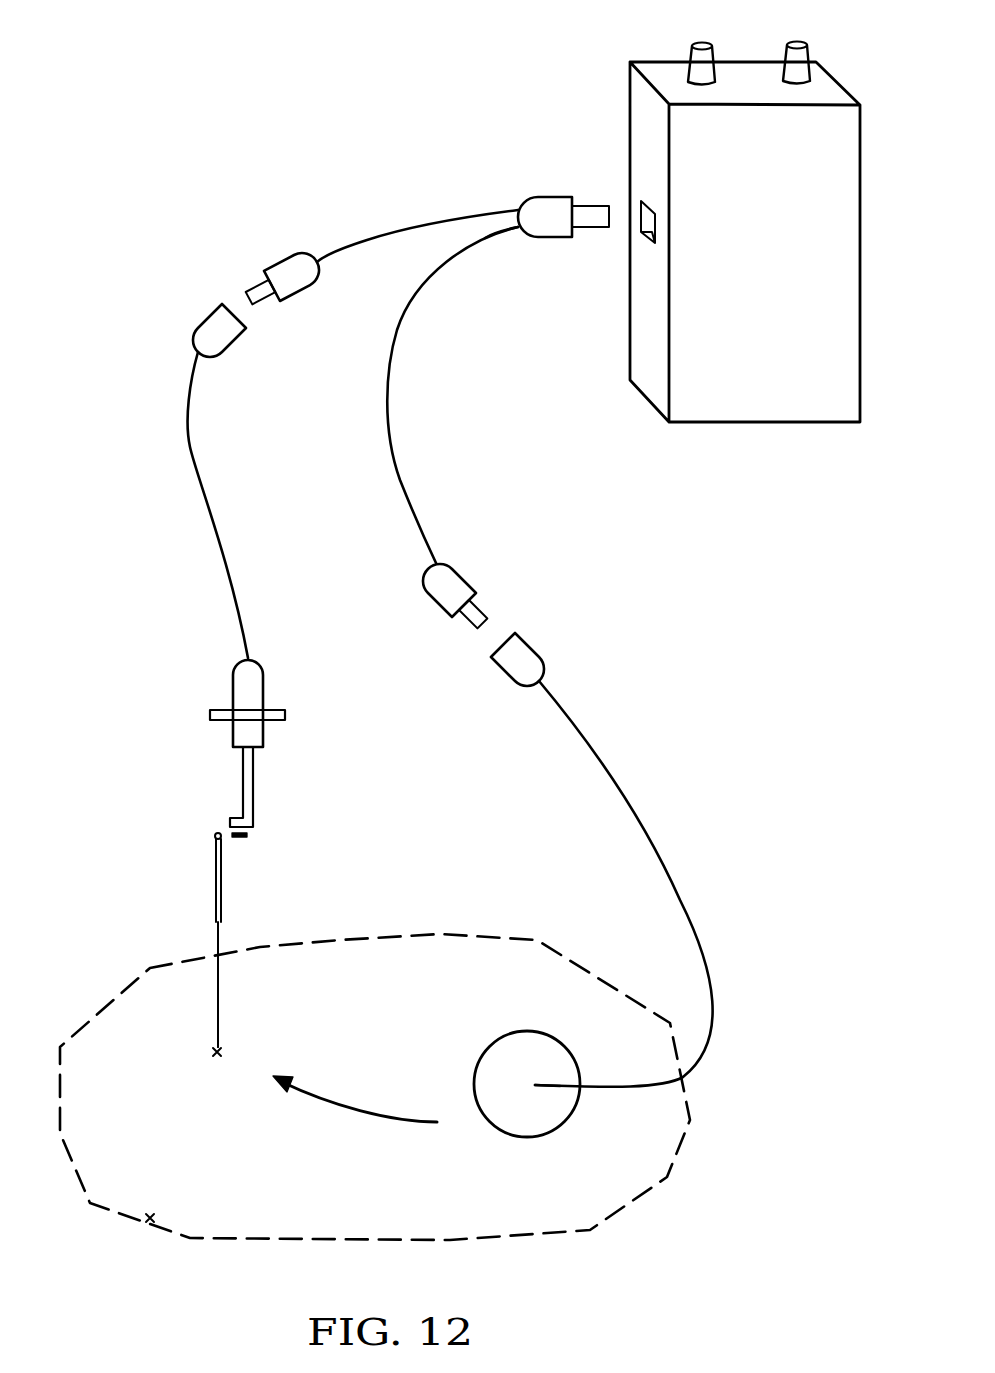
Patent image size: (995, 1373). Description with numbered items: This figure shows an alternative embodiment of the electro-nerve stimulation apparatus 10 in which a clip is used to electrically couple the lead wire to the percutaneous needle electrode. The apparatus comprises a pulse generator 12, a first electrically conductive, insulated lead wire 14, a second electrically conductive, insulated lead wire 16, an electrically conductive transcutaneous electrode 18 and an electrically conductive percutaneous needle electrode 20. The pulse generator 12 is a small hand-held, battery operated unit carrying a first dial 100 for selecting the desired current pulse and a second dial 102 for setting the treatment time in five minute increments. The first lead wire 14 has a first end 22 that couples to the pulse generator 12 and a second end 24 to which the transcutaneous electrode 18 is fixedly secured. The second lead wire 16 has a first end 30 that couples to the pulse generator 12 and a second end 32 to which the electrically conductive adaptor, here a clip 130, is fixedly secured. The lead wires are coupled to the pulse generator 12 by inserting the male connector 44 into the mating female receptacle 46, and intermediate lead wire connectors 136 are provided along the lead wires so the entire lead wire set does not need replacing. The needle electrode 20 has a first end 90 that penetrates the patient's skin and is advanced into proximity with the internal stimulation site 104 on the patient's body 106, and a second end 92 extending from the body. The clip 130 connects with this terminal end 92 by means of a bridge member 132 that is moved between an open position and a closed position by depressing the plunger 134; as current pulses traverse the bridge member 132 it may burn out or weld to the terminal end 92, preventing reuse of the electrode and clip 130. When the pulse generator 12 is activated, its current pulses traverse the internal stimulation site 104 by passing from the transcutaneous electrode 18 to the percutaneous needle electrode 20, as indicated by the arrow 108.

The electro-nerve stimulation apparatus 10 is at (314, 187).
The pulse generator 12 is at (778, 410).
The first lead wire 14 is at (398, 477).
The second lead wire 16 is at (207, 500).
The transcutaneous electrode 18 is at (530, 1118).
The percutaneous needle electrode 20 is at (218, 935).
The first end of the first lead wire 22 is at (513, 230).
The second end of the first lead wire 24 is at (543, 1087).
The first end of the second lead wire 30 is at (517, 190).
The second end of the second lead wire 32 is at (229, 733).
The male connector 44 is at (544, 210).
The female receptacle 46 is at (644, 240).
The first end of the needle electrode 90 is at (218, 1045).
The second end of the needle electrode 92 is at (215, 834).
The first dial 100 is at (700, 44).
The second dial 102 is at (800, 43).
The internal stimulation site 104 is at (216, 1058).
The patient's body 106 is at (150, 1218).
The arrow 108 is at (343, 1112).
The clip 130 is at (228, 710).
The bridge member 132 is at (245, 836).
The plunger 134 is at (255, 688).
The intermediate lead wire connectors 136 is at (265, 271).